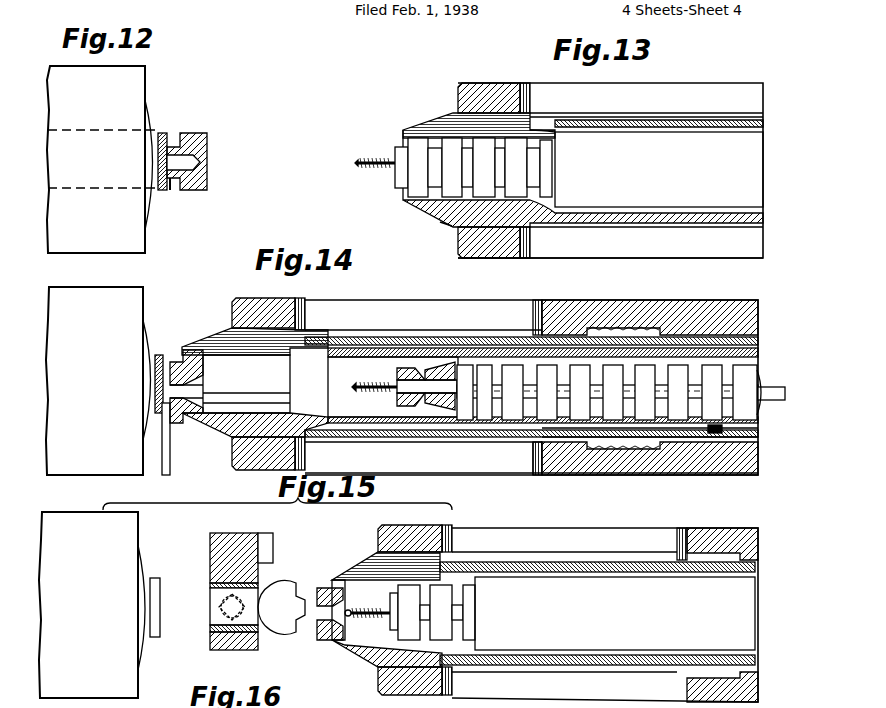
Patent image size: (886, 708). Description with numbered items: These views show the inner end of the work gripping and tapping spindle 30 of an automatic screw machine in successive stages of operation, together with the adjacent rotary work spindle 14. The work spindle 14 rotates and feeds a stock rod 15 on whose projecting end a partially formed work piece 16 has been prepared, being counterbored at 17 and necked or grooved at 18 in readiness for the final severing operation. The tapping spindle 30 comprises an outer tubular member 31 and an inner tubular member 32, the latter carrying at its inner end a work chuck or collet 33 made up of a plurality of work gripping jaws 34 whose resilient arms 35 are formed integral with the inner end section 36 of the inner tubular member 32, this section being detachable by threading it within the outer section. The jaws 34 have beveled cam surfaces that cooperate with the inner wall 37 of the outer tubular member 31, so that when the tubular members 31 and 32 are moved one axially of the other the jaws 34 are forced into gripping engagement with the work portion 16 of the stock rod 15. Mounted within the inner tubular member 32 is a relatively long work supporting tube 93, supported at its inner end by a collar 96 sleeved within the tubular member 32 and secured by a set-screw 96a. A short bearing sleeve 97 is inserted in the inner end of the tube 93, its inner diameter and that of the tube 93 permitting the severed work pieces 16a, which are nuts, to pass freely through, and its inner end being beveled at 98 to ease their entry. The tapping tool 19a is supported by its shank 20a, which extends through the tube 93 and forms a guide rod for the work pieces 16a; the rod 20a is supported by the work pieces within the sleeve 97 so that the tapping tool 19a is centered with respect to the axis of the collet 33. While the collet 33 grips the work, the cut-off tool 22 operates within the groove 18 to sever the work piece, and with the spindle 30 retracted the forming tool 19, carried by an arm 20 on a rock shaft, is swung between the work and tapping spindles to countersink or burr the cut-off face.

In FIG. 12, the rotary work spindle 14 is at (96, 223).
In FIG. 14, the rotary work spindle 14 is at (96, 442).
In FIG. 15, the rotary work spindle 14 is at (88, 668).
In FIG. 12, the stock rod 15 is at (161, 133).
In FIG. 14, the stock rod 15 is at (160, 355).
In FIG. 15, the stock rod 15 is at (158, 578).
In FIG. 12, the partially formed work piece 16 is at (197, 133).
In FIG. 14, the partially formed work piece 16 is at (193, 350).
In FIG. 12, the counterbore 17 is at (198, 165).
In FIG. 14, the counterbore 17 is at (215, 385).
In FIG. 12, the groove 18 is at (170, 185).
In FIG. 15, the forming tool 19 is at (283, 584).
In FIG. 13, the tapping tool 19a is at (372, 160).
In FIG. 14, the tapping tool 19a is at (372, 380).
In FIG. 15, the tapping tool 19a is at (350, 635).
In FIG. 15, the arm 20 is at (212, 540).
In FIG. 14, the shank 20a is at (775, 385).
In FIG. 14, the cut-off tool 22 is at (170, 440).
In FIG. 13, the work gripping and tapping spindle 30 is at (610, 162).
In FIG. 14, the work gripping and tapping spindle 30 is at (531, 379).
In FIG. 15, the work gripping and tapping spindle 30 is at (545, 604).
In FIG. 13, the outer tubular member 31 is at (605, 258).
In FIG. 14, the outer tubular member 31 is at (605, 478).
In FIG. 14, the inner tubular member 32 is at (760, 350).
In FIG. 13, the collet 33 is at (418, 205).
In FIG. 13, the work gripping jaws 34 is at (450, 215).
In FIG. 13, the resilient arms 35 is at (675, 215).
In FIG. 15, the resilient arms 35 is at (622, 572).
In FIG. 14, the inner end section 36 is at (537, 475).
In FIG. 15, the inner end section 36 is at (708, 572).
In FIG. 13, the inner wall 37 is at (466, 112).
In FIG. 14, the inner wall 37 is at (250, 312).
In FIG. 13, the work supporting tube 93 is at (755, 172).
In FIG. 14, the work supporting tube 93 is at (688, 355).
In FIG. 15, the work supporting tube 93 is at (755, 600).
In FIG. 14, the collar 96 is at (680, 437).
In FIG. 14, the set-screw 96a is at (715, 433).
In FIG. 14, the bearing sleeve 97 is at (420, 356).
In FIG. 14, the bevel 98 is at (328, 365).
In FIG. 13, the severed work piece 16a is at (548, 172).
In FIG. 14, the severed work piece 16a is at (540, 368).
In FIG. 15, the severed work piece 16a is at (336, 588).